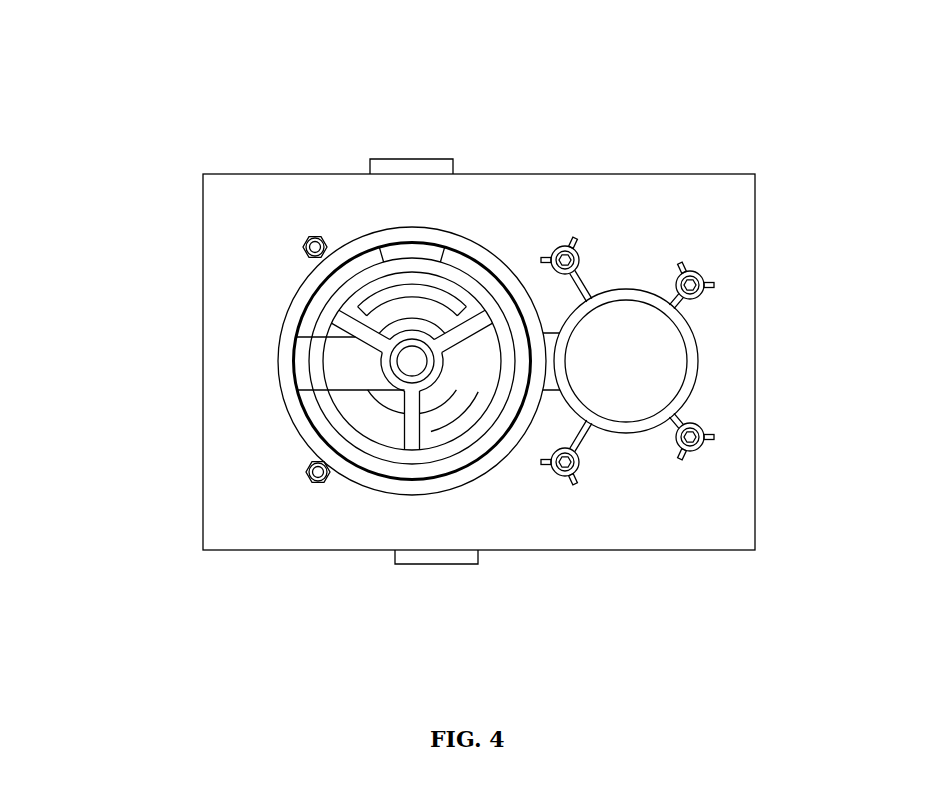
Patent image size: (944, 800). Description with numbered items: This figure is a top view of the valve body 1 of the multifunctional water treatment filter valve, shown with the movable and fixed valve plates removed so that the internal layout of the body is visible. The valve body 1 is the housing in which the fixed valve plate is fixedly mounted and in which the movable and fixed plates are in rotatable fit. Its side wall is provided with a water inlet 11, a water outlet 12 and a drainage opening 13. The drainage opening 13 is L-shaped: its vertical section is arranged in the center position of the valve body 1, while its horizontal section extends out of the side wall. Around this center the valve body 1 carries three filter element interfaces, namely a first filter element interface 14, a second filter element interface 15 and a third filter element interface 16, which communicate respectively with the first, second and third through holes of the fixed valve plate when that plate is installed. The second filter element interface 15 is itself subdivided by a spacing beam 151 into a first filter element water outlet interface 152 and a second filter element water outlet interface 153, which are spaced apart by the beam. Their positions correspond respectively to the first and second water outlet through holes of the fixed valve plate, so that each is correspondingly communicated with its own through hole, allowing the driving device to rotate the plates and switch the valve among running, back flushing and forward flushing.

The valve body 1 is at (625, 190).
The water inlet 11 is at (425, 553).
The water outlet 12 is at (445, 168).
The drainage opening 13 is at (333, 362).
The first filter element interface 14 is at (460, 415).
The second filter element interface 15 is at (493, 320).
The spacing beam 151 is at (452, 290).
The first filter element water outlet interface 152 is at (367, 317).
The second filter element water outlet interface 153 is at (370, 275).
The third filter element interface 16 is at (358, 427).